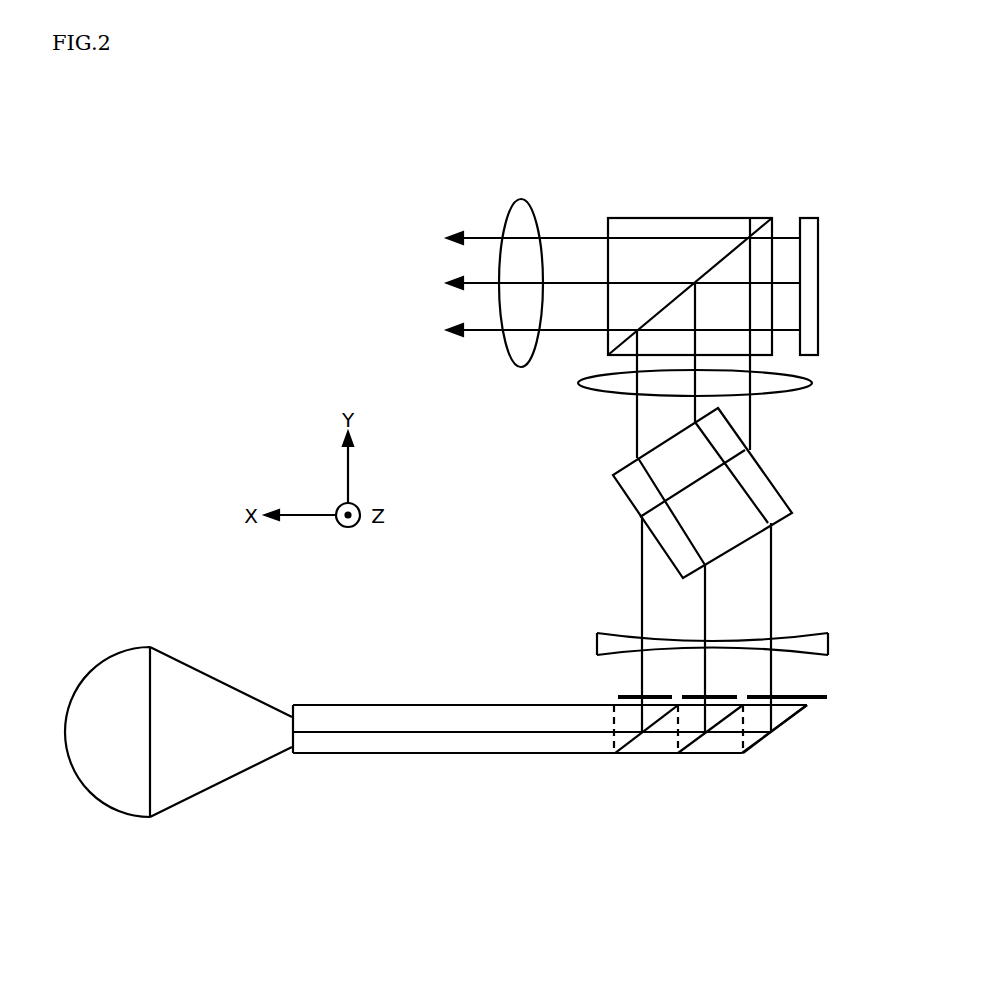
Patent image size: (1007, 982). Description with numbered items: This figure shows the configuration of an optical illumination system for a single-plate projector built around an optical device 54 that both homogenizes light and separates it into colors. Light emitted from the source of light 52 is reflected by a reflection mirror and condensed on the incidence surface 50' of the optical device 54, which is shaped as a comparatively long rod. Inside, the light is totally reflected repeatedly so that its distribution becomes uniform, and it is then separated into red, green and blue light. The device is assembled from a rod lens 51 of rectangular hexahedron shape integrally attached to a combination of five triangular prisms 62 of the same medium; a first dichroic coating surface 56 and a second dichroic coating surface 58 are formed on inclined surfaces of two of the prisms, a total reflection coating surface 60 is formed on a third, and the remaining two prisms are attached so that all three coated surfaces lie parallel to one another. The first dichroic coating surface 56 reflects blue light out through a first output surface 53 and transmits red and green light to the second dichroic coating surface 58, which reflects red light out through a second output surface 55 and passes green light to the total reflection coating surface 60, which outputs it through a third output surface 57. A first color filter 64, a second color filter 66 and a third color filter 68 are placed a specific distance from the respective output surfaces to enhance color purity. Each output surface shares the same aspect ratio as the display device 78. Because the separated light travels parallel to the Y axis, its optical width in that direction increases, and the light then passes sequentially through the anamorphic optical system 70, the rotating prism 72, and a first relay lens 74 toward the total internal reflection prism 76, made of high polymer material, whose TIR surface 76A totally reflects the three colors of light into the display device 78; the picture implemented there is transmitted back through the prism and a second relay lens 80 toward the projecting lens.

The incidence surface 50' is at (221, 732).
The rod lens 51 is at (373, 712).
The source of light 52 is at (127, 655).
The first output surface 53 is at (633, 707).
The optical device with a function of homogenizing and color separation 54 is at (458, 673).
The second output surface 55 is at (700, 702).
The first dichroic coating surface 56 is at (628, 748).
The third output surface 57 is at (808, 704).
The second dichroic coating surface 58 is at (695, 748).
The total reflection coating surface 60 is at (760, 748).
The triangular prism 62 is at (662, 748).
The first color filter 64 is at (633, 695).
The second color filter 66 is at (712, 695).
The third color filter 68 is at (800, 695).
The anamorphic optical system 70 is at (828, 645).
The rotating prism 72 is at (776, 505).
The first relay lens 74 is at (812, 382).
The total internal reflection prism 76 is at (620, 222).
The TIR surface 76A is at (716, 262).
The display device 78 is at (811, 220).
The second relay lens 80 is at (519, 207).